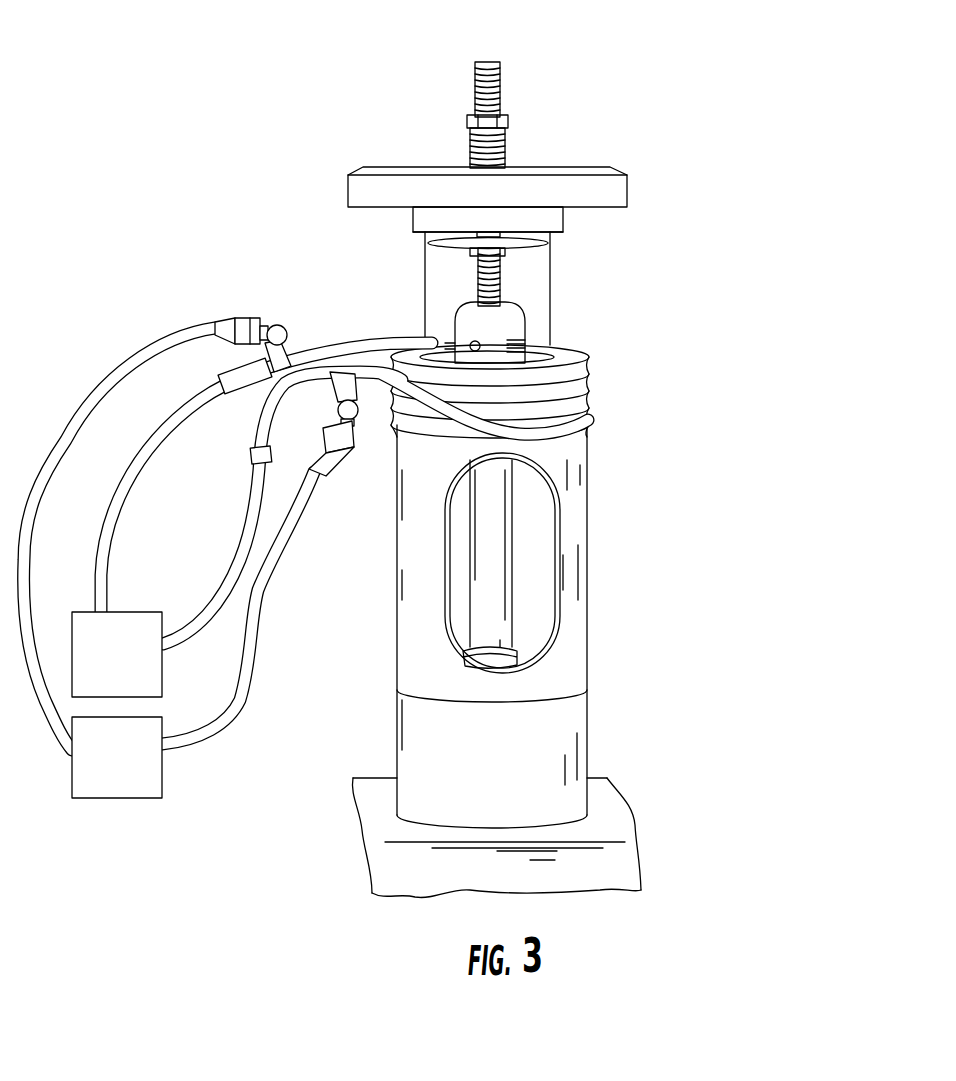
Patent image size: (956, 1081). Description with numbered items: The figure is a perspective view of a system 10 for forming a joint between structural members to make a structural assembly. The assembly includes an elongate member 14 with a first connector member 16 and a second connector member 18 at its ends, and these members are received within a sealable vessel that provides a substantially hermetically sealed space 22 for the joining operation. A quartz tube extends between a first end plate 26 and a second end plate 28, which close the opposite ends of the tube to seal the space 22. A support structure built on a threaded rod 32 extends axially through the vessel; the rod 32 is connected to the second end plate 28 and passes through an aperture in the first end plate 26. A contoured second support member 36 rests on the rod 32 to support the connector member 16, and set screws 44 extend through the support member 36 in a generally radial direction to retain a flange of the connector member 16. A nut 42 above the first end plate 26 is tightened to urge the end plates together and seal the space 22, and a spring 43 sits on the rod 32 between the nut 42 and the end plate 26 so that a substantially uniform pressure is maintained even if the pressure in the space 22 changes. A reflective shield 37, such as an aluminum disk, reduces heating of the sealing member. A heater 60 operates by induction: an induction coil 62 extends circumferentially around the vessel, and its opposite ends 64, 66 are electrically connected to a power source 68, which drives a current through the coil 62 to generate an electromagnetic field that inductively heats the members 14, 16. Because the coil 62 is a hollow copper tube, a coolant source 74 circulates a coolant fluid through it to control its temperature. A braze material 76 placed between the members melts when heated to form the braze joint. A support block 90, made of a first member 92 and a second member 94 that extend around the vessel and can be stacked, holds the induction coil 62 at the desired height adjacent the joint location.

The system 10 is at (692, 97).
The elongate member 14 is at (502, 531).
The first connector member 16 is at (427, 353).
The second connector member 18 is at (480, 663).
The hermetically sealed space 22 is at (540, 289).
The first end plate 26 is at (620, 181).
The second end plate 28 is at (627, 855).
The threaded rod 32 is at (491, 62).
The second support member 36 is at (513, 312).
The reflective shield 37 is at (420, 340).
The nut 42 is at (508, 118).
The spring 43 is at (470, 135).
The set screws 44 is at (526, 346).
The heater 60 is at (579, 376).
The induction coil 62 is at (588, 405).
The first end of the coil 64 is at (332, 350).
The second end of the coil 66 is at (288, 416).
The power source 68 is at (129, 770).
The coolant source 74 is at (129, 667).
The braze material 76 is at (545, 647).
The support block 90 is at (676, 551).
The first member 92 is at (568, 730).
The second member 94 is at (592, 605).